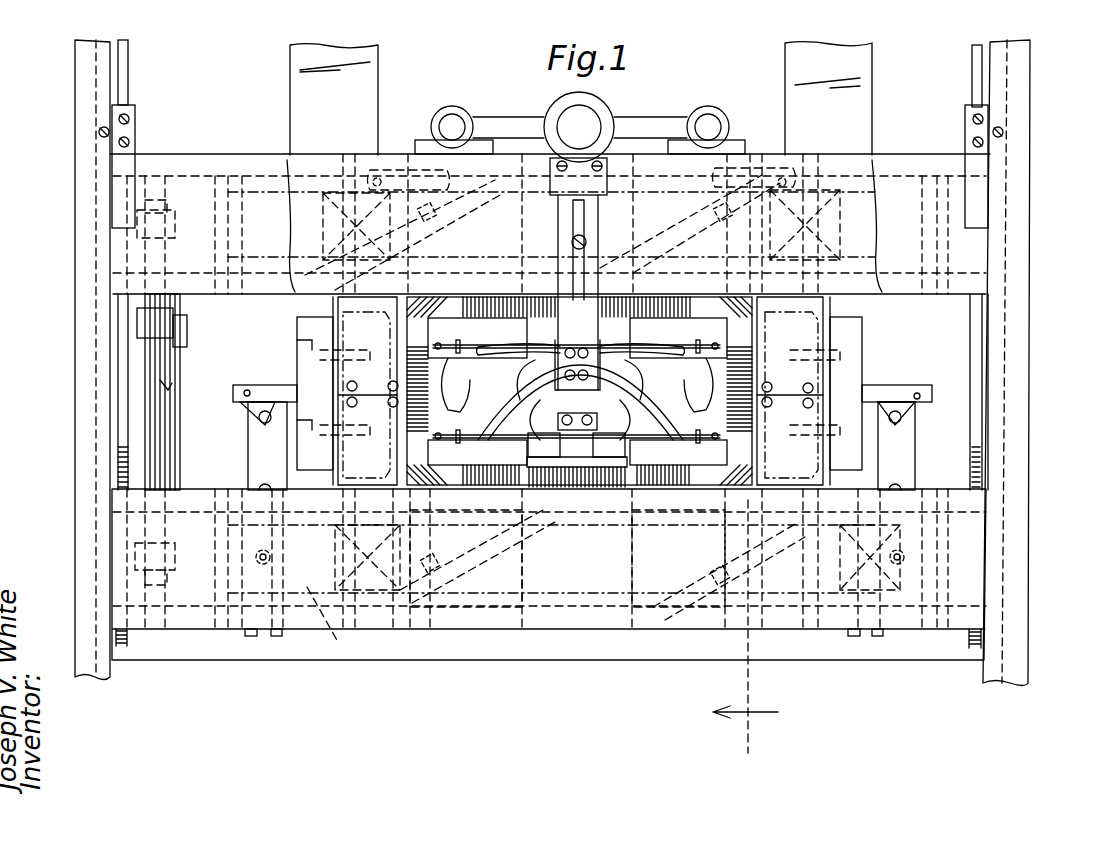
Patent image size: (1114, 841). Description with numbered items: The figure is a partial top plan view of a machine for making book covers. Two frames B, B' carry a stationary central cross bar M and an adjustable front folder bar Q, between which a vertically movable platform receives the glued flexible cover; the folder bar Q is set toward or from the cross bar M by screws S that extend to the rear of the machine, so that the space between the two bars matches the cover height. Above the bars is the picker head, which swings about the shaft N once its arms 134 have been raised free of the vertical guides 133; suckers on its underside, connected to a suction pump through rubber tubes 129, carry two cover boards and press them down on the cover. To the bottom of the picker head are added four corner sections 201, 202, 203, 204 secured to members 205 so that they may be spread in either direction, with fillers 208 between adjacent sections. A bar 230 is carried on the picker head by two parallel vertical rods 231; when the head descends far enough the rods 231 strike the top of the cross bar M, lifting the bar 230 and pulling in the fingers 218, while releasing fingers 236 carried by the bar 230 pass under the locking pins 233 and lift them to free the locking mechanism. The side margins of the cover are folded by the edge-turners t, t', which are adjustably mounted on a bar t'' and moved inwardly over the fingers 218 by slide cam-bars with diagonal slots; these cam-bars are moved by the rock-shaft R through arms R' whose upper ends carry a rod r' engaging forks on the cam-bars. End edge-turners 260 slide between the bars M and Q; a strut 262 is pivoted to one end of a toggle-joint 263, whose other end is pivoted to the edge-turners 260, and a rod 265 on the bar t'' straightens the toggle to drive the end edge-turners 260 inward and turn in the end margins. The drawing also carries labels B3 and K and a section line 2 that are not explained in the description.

The frame B is at (78, 360).
The frame B' is at (1020, 363).
The bottom rail B3 is at (300, 650).
The stationary cross bar M is at (258, 165).
The shaft N is at (579, 127).
The vertical guides 133 is at (452, 127).
The arms 134 is at (537, 100).
The parallel vertical rods 231 is at (602, 167).
The bar 230 is at (593, 245).
The edge-turner t is at (550, 231).
The edge-turner t' is at (729, 558).
The bar t'' is at (431, 576).
The screws S is at (120, 347).
The rock-shaft R is at (185, 375).
The arms R' is at (179, 327).
The rod r' is at (108, 392).
The end edge-turners 260 is at (313, 322).
The strut 262 is at (262, 383).
The toggle-joint 263 is at (257, 412).
The rod 265 is at (262, 454).
The corner section 204 is at (440, 332).
The corner section 203 is at (432, 452).
The corner section 201 is at (722, 333).
The corner section 202 is at (722, 455).
The members 205 is at (525, 430).
The locking pins 233 is at (463, 410).
The rubber tubes 129 is at (526, 345).
The releasing fingers 236 is at (575, 418).
The fillers 208 is at (587, 487).
The fingers 218 is at (697, 487).
The keeper K is at (597, 500).
The adjustable folder bar Q is at (565, 620).
The section line 2 is at (745, 630).